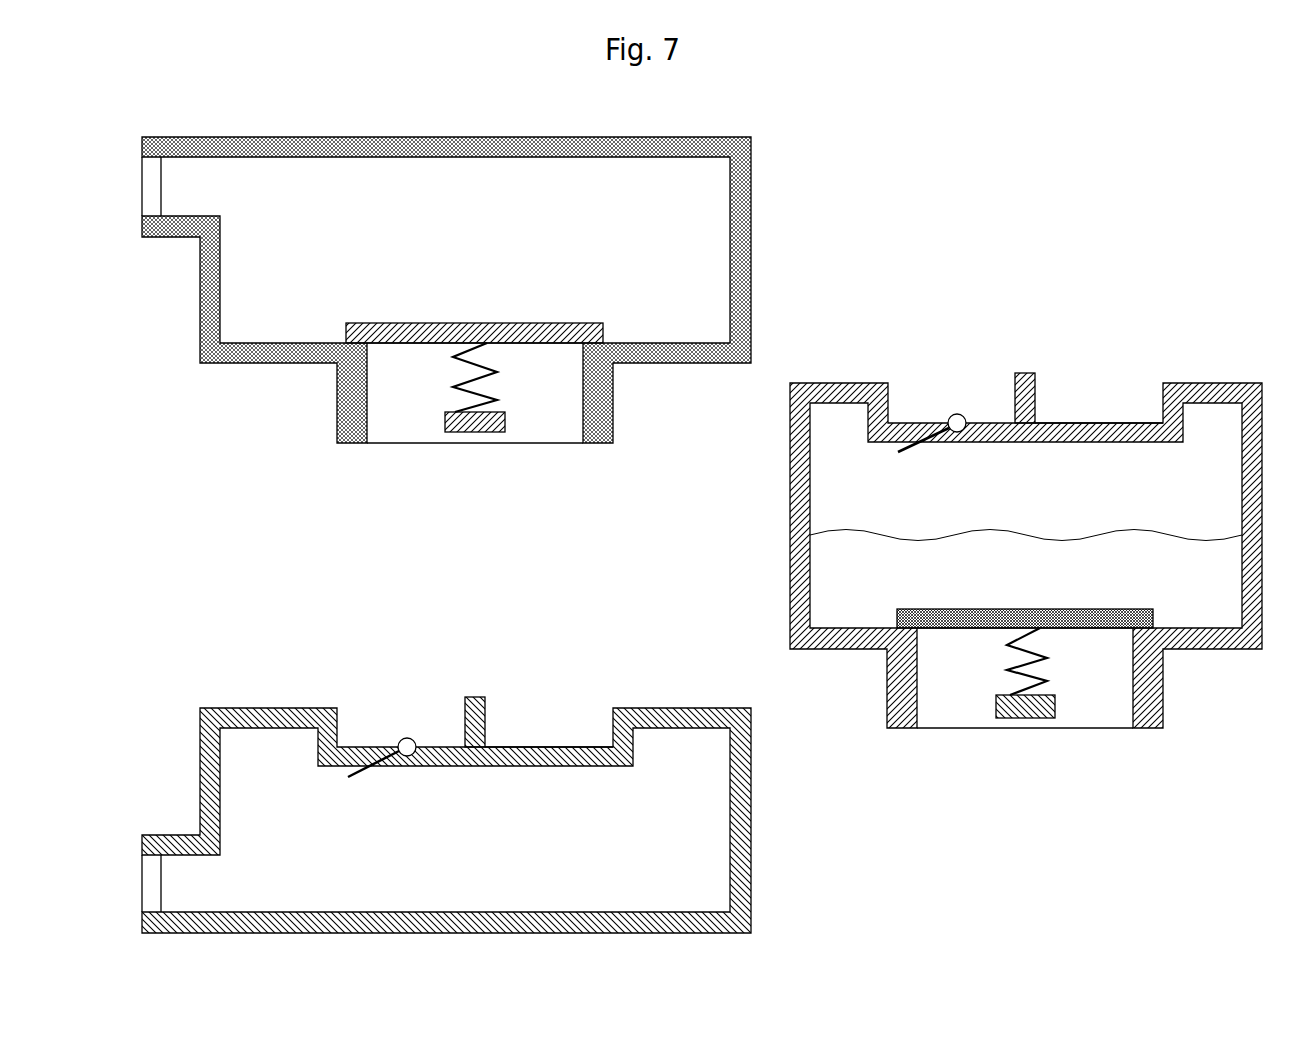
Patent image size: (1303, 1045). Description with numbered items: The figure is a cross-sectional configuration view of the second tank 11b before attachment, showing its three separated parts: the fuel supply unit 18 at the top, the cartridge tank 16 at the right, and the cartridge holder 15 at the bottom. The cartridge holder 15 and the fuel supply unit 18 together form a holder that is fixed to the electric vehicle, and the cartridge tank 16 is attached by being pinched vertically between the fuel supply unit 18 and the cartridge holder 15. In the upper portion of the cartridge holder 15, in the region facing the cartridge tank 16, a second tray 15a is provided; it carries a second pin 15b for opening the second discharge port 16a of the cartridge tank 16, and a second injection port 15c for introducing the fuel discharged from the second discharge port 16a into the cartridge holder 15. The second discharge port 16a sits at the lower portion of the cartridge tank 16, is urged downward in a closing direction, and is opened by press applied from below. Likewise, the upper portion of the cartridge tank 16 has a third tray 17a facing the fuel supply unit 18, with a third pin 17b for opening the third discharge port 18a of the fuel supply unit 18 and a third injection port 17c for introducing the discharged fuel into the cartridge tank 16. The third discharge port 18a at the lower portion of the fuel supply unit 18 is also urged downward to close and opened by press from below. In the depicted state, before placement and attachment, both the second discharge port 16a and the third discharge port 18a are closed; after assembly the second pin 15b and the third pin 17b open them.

The fuel supply unit 18 is at (803, 208).
The third discharge port 18a is at (396, 422).
The cartridge holder 15 is at (607, 585).
The second tray 15a is at (589, 714).
The second pin 15b is at (487, 697).
The second injection port 15c is at (403, 757).
The cartridge tank 16 is at (1077, 241).
The second discharge port 16a is at (958, 717).
The third tray 17a is at (1139, 391).
The third pin 17b is at (1031, 373).
The third injection port 17c is at (950, 436).
The second tank 11b is at (1080, 862).